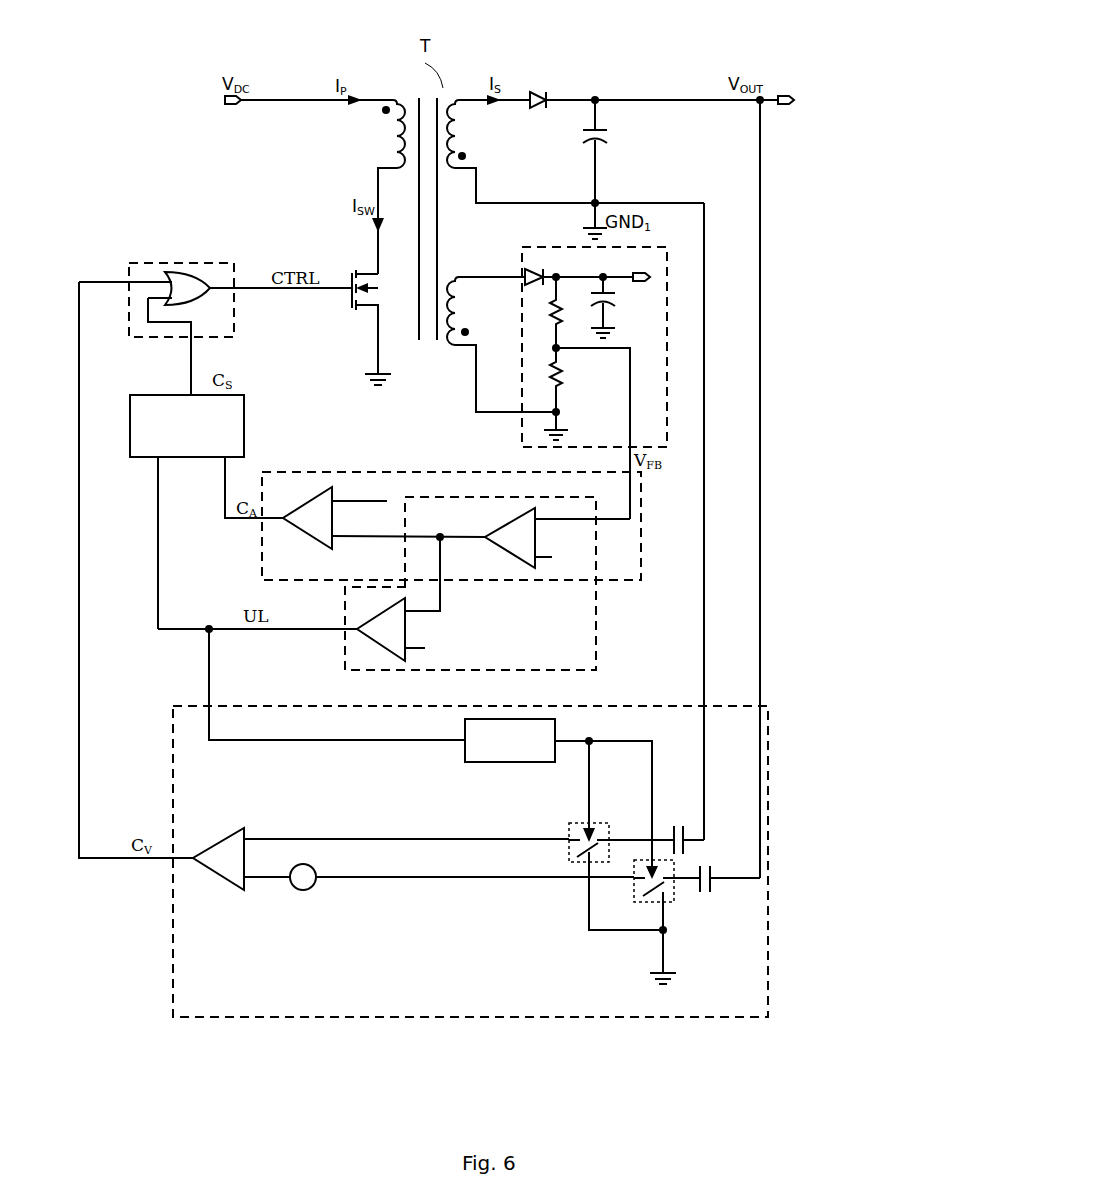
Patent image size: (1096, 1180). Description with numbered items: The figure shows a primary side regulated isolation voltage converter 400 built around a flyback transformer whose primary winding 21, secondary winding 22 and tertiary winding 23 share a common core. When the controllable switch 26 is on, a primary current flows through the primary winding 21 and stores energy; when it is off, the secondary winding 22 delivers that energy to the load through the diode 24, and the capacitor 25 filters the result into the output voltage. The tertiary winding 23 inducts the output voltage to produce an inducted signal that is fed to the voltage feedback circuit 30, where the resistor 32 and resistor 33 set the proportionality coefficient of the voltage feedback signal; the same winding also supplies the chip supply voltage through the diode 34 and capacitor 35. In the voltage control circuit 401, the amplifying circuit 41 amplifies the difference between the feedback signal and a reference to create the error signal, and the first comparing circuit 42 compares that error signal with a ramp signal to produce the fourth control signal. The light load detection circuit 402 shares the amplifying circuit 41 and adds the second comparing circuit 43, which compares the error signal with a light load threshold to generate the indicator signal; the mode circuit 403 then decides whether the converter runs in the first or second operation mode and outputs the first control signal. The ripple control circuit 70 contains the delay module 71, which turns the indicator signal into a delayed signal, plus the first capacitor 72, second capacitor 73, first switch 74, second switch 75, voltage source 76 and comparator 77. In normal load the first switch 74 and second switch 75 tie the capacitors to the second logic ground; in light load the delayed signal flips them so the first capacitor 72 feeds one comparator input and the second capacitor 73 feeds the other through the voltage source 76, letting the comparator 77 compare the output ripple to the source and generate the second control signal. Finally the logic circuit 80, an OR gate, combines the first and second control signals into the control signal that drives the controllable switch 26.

The isolation voltage converter 400 is at (833, 108).
The primary winding 21 is at (385, 157).
The secondary winding 22 is at (478, 157).
The tertiary winding 23 is at (470, 267).
The diode 24 is at (545, 86).
The capacitor 25 is at (609, 164).
The controllable switch 26 is at (357, 272).
The voltage feedback circuit 30 is at (667, 387).
The resistor 32 is at (567, 312).
The resistor 33 is at (569, 380).
The diode 34 is at (558, 266).
The capacitor 35 is at (614, 302).
The amplifying circuit 41 is at (505, 552).
The first comparing circuit 42 is at (318, 545).
The second comparing circuit 43 is at (383, 647).
The voltage control circuit 401 is at (645, 585).
The light load detection circuit 402 is at (597, 660).
The mode circuit 403 is at (247, 428).
The logic circuit 80 is at (168, 262).
The ripple control circuit 70 is at (770, 958).
The delay module 71 is at (510, 767).
The first capacitor 72 is at (672, 818).
The second capacitor 73 is at (720, 870).
The first switch 74 is at (578, 818).
The second switch 75 is at (670, 905).
The voltage source 76 is at (310, 892).
The comparator 77 is at (225, 882).